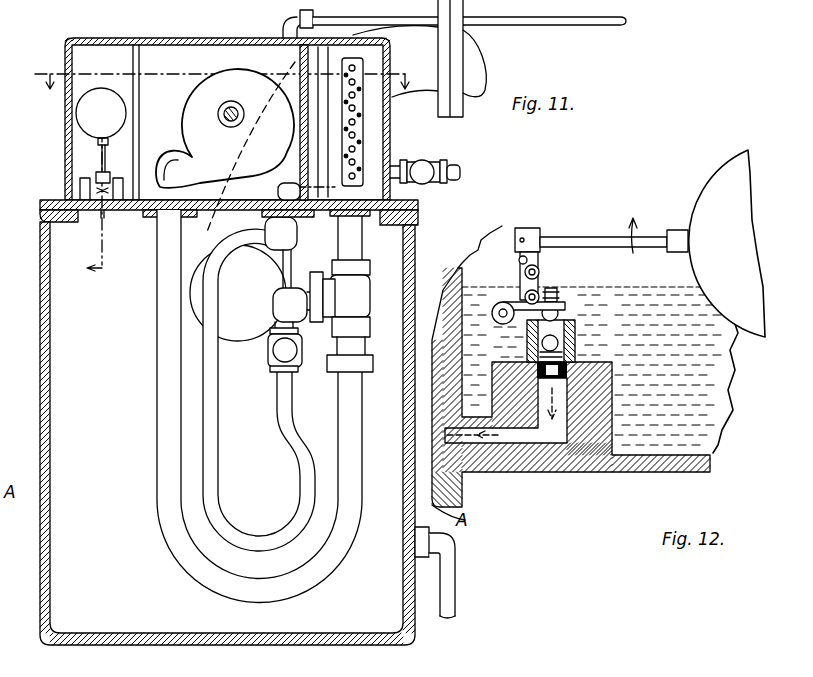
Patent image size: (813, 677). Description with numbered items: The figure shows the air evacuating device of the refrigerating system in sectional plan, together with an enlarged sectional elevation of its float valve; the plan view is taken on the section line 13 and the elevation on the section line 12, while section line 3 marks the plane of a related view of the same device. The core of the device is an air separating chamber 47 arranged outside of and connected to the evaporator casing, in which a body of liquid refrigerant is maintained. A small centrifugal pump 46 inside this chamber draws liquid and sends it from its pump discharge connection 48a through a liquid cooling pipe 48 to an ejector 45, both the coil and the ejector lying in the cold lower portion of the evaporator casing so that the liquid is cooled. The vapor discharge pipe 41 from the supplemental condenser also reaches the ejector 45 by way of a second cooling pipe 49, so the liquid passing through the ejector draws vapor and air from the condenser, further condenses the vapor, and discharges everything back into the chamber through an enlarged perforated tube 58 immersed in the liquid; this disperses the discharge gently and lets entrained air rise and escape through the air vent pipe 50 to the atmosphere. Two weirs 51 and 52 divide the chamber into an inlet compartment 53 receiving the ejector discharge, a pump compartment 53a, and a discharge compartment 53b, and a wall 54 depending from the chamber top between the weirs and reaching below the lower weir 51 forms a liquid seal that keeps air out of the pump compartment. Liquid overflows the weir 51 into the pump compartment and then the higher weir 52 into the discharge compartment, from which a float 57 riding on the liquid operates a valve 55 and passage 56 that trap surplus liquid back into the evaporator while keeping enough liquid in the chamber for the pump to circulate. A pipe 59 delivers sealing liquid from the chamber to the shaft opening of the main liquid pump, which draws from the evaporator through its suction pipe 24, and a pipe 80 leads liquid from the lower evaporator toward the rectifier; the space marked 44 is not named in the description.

In FIG. 11, the section line 3 is at (413, 76).
In FIG. 11, the section line 12 is at (104, 186).
In FIG. 11, the section line 13 is at (217, 76).
In FIG. 11, the suction pipe 24 is at (360, 53).
In FIG. 11, the vapor discharge pipe 41 is at (455, 165).
In FIG. 11, the tank chamber 44 is at (227, 428).
In FIG. 11, the ejector 45 is at (362, 297).
In FIG. 11, the pump 46 is at (219, 108).
In FIG. 11, the air separating chamber 47 is at (158, 38).
In FIG. 12, the air separating chamber 47 is at (628, 472).
In FIG. 11, the liquid cooling pipe 48 is at (157, 378).
In FIG. 11, the pump discharge connection 48a is at (160, 218).
In FIG. 11, the cooling pipe 49 is at (216, 398).
In FIG. 11, the air vent pipe 50 is at (227, 449).
In FIG. 11, the weir 51 is at (300, 172).
In FIG. 11, the weir 52 is at (139, 127).
In FIG. 11, the inlet compartment 53 is at (375, 142).
In FIG. 11, the pump compartment 53a is at (204, 57).
In FIG. 11, the discharge compartment 53b is at (72, 50).
In FIG. 11, the wall 54 is at (297, 113).
In FIG. 11, the valve 55 is at (96, 182).
In FIG. 12, the valve 55 is at (568, 332).
In FIG. 11, the passage 56 is at (100, 212).
In FIG. 12, the passage 56 is at (530, 436).
In FIG. 11, the float 57 is at (85, 119).
In FIG. 12, the float 57 is at (652, 243).
In FIG. 11, the perforated tube 58 is at (345, 112).
In FIG. 11, the pipe 59 is at (550, 27).
In FIG. 11, the pipe 80 is at (455, 588).